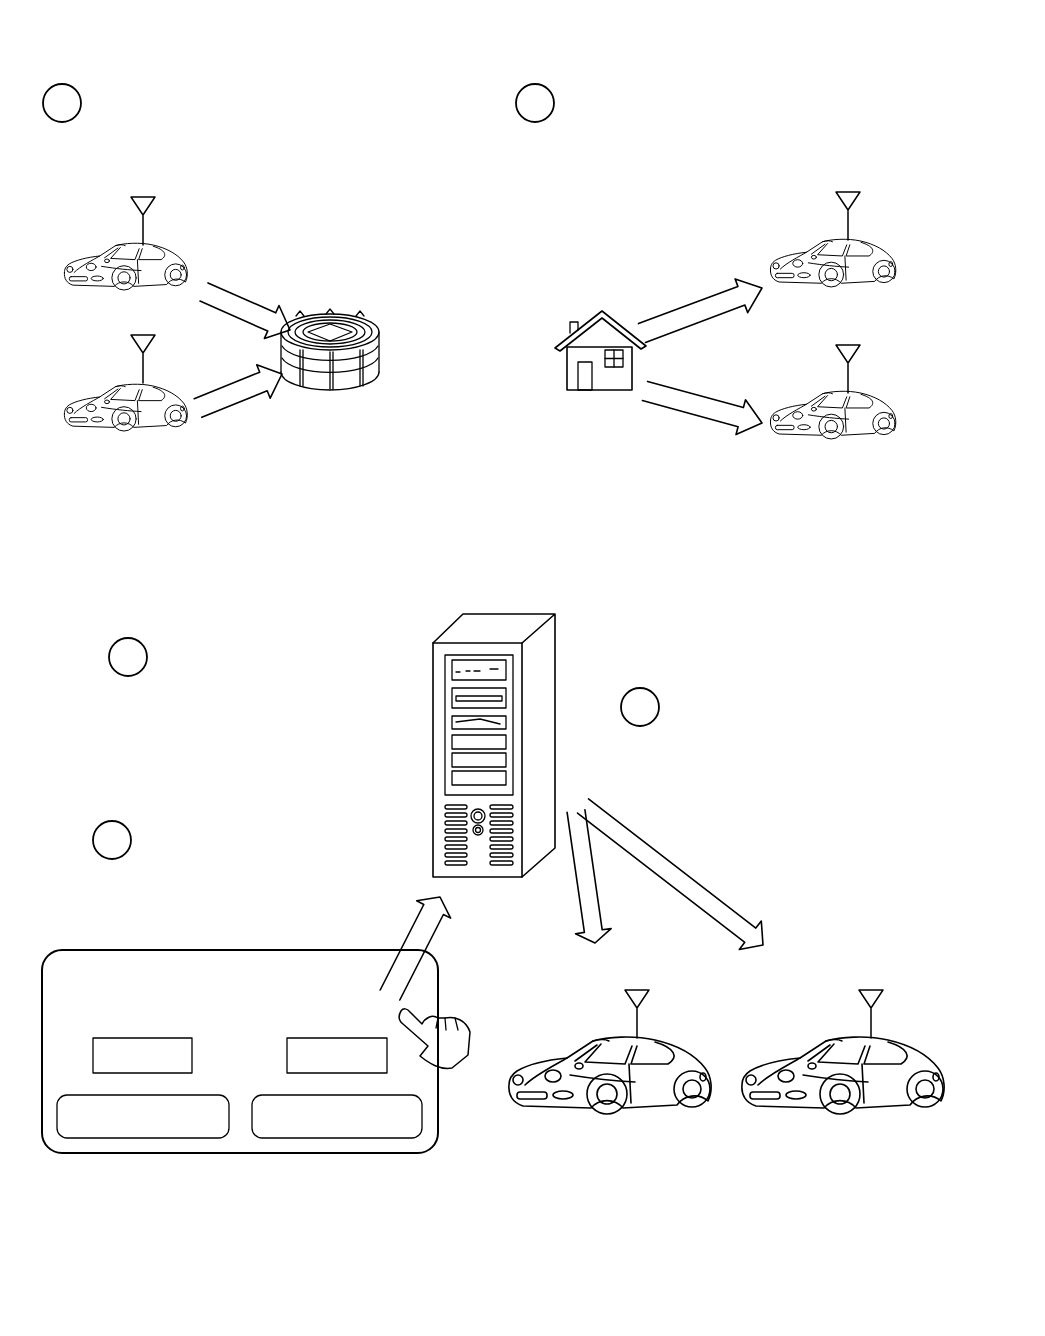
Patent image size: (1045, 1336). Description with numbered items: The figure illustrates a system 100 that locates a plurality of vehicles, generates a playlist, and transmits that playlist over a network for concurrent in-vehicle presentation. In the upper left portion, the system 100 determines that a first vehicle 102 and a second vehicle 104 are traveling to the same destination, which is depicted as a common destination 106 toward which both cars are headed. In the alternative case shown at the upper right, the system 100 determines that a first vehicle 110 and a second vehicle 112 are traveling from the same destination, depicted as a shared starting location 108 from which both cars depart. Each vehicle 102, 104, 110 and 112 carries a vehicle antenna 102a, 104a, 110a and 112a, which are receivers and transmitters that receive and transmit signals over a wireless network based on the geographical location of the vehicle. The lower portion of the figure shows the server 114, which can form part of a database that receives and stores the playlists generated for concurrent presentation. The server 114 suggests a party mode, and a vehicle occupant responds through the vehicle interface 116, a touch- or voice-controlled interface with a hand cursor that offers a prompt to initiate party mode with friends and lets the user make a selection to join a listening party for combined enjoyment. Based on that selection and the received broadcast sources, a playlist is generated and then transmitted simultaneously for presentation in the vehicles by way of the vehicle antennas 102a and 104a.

The system 100 is at (118, 28).
The first vehicle 102 is at (130, 246).
The vehicle antenna 102a is at (138, 197).
The second vehicle 104 is at (130, 382).
The vehicle antenna 104a is at (138, 333).
The common destination (stadium) 106 is at (343, 313).
The common origin (house) 108 is at (598, 312).
The first vehicle 110 is at (838, 240).
The vehicle antenna 110a is at (846, 192).
The second vehicle 112 is at (838, 392).
The vehicle antenna 112a is at (846, 345).
The server 114 is at (452, 632).
The vehicle interface 116 is at (92, 950).